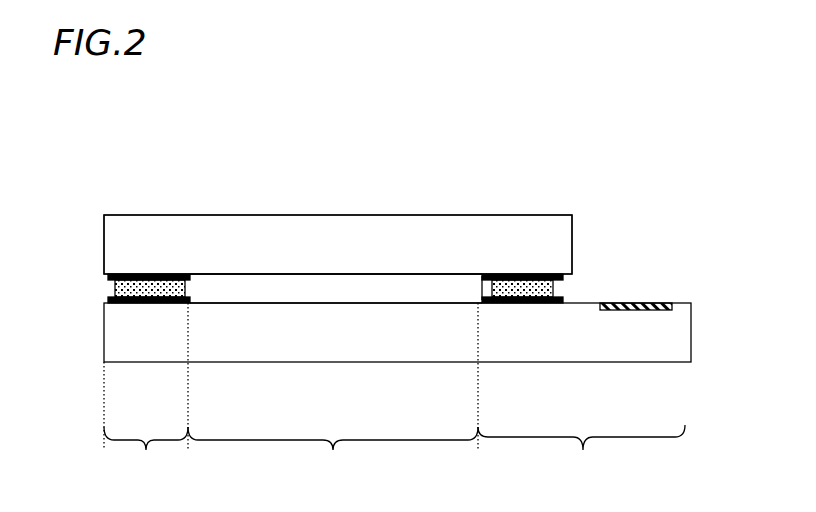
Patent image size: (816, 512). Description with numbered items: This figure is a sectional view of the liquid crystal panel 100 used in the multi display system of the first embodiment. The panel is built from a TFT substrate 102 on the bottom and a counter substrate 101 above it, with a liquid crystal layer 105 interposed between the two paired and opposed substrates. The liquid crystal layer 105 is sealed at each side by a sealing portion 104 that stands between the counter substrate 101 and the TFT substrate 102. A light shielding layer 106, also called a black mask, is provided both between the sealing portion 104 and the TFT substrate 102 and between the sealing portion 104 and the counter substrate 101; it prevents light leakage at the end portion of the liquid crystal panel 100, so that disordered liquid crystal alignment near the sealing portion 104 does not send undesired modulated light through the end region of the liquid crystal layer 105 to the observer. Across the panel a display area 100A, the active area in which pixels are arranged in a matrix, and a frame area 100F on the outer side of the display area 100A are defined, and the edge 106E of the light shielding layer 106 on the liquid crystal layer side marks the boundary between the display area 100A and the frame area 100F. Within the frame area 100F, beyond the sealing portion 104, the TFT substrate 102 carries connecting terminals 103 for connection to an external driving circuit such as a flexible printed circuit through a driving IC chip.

The liquid crystal panel 100 is at (164, 158).
The counter substrate 101 is at (277, 225).
The TFT substrate 102 is at (322, 330).
The connecting terminals 103 is at (635, 302).
The sealing portion 104 is at (158, 290).
The liquid crystal layer 105 is at (357, 288).
The light shielding layer 106 is at (108, 300).
The edge of the light shielding layer 106E is at (481, 280).
The frame area 100F is at (394, 392).
The display area 100A is at (333, 454).